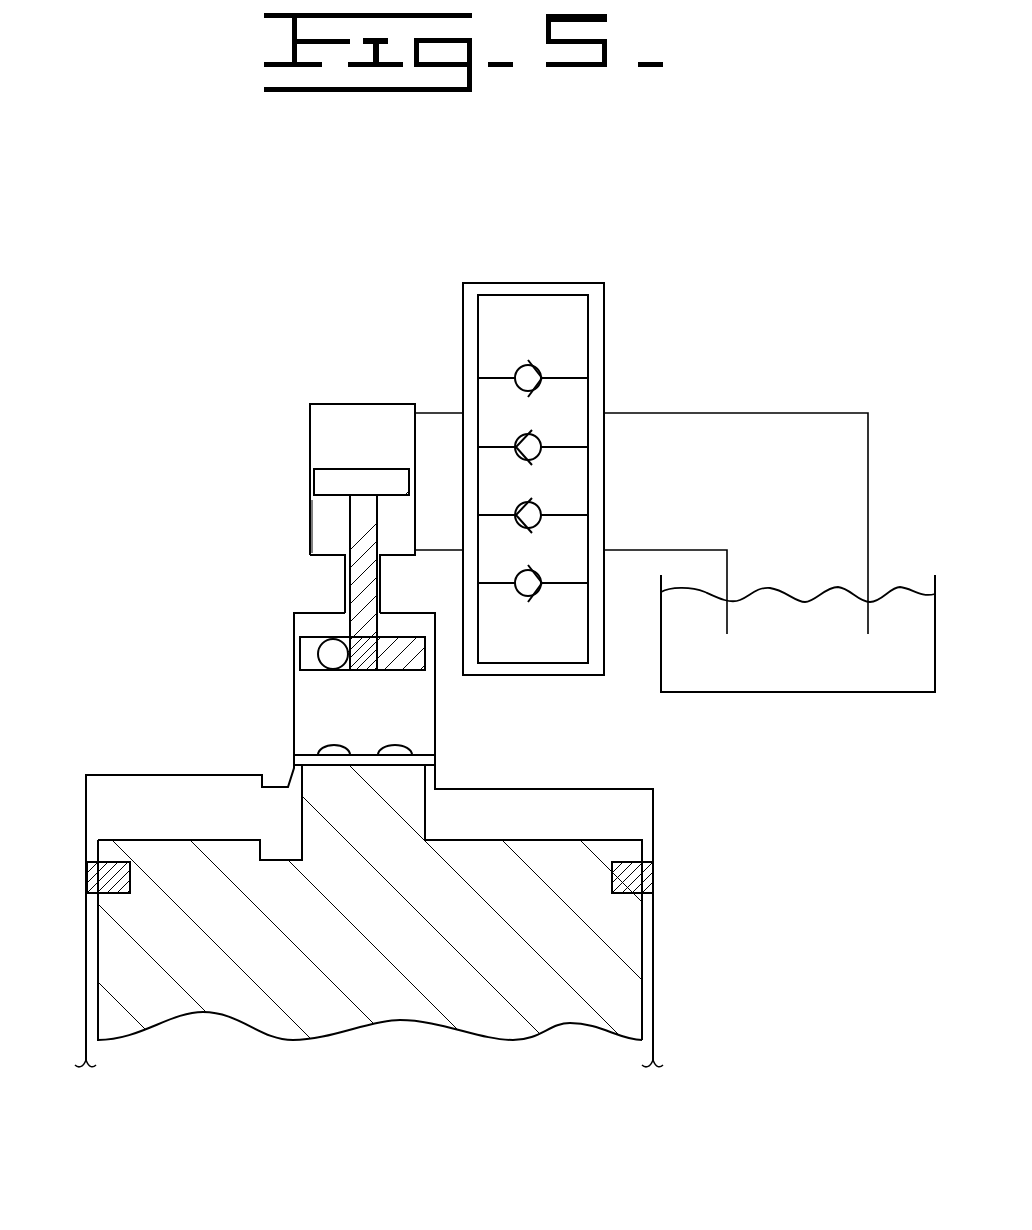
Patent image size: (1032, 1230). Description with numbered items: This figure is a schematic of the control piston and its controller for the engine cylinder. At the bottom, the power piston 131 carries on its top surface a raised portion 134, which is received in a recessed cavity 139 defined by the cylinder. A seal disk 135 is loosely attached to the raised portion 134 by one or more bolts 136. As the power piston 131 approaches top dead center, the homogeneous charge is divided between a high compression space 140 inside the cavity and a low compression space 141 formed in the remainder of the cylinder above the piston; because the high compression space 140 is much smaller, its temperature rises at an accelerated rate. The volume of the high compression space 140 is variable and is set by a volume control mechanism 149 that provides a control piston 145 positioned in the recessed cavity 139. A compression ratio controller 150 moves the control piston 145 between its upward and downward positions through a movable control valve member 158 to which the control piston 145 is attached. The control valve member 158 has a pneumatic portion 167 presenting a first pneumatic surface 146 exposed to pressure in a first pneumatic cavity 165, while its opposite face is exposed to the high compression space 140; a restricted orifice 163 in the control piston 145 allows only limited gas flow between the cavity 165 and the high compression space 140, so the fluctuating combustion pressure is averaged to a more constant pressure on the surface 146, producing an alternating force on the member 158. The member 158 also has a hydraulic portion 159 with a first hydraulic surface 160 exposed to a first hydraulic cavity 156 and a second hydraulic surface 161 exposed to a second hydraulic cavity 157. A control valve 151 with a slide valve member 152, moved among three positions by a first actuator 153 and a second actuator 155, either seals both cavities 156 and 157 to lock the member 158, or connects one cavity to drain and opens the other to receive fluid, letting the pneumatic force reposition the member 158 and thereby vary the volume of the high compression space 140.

The power piston 131 is at (653, 925).
The raised portion 134 is at (425, 795).
The seal disk 135 is at (433, 757).
The bolts 136 is at (318, 745).
The recessed cavity 139 is at (436, 730).
The high compression space 140 is at (333, 727).
The low compression space 141 is at (193, 810).
The control piston 145 is at (365, 672).
The first pneumatic surface 146 is at (410, 632).
The volume control mechanism 149 is at (276, 316).
The compression ratio controller 150 is at (710, 256).
The control valve 151 is at (612, 251).
The slide valve member 152 is at (563, 419).
The first actuator 153 is at (553, 290).
The second actuator 155 is at (528, 655).
The first hydraulic cavity 156 is at (333, 456).
The second hydraulic cavity 157 is at (332, 532).
The control valve member 158 is at (367, 612).
The hydraulic portion 159 is at (320, 477).
The first hydraulic surface 160 is at (386, 467).
The second hydraulic surface 161 is at (342, 505).
The restricted orifice 163 is at (331, 639).
The first pneumatic cavity 165 is at (302, 622).
The pneumatic portion 167 is at (245, 644).